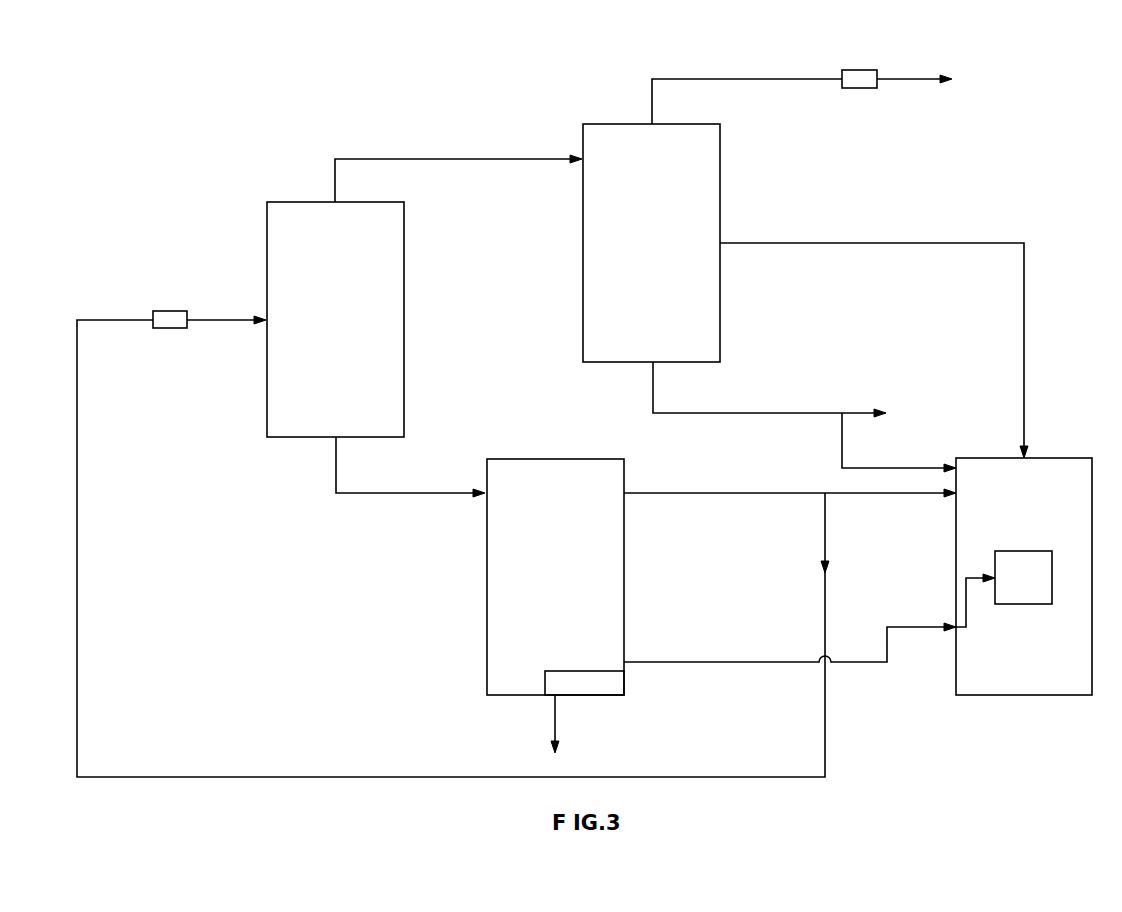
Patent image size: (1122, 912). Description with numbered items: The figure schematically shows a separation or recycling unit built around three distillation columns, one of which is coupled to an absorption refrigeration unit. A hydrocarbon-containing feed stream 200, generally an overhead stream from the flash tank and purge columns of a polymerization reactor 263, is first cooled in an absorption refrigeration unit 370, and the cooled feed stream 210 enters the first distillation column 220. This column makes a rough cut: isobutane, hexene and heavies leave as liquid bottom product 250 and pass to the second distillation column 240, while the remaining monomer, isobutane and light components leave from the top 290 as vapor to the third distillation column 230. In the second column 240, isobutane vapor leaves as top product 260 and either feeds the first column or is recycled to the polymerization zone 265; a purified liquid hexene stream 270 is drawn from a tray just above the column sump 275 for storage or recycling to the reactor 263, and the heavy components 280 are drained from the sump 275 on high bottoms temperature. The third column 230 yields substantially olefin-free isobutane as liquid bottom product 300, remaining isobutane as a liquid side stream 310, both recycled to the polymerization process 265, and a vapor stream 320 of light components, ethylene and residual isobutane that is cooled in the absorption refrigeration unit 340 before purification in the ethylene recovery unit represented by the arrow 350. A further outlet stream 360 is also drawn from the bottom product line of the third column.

The hydrocarbon-containing feed stream 200 is at (117, 318).
The cooled feed stream 210 is at (217, 318).
The first distillation column 220 is at (353, 333).
The third distillation column 230 is at (669, 257).
The second distillation column 240 is at (573, 592).
The liquid bottom product 250 is at (432, 493).
The top product 260 is at (712, 491).
The polymerization reactor 263 is at (1040, 588).
The polymerization zone 265 is at (1040, 525).
The purified liquid hexene stream 270 is at (717, 661).
The column sump 275 is at (610, 673).
The heavy components 280 is at (555, 712).
The top of the first distillation column 290 is at (530, 159).
The liquid bottom product 300 is at (798, 413).
The liquid side stream 310 is at (810, 243).
The vapor stream 320 is at (750, 78).
The absorption refrigeration unit 340 is at (855, 70).
The ethylene recovery unit 350 is at (942, 78).
The outlet stream 360 is at (877, 406).
The absorption refrigeration unit 370 is at (177, 311).